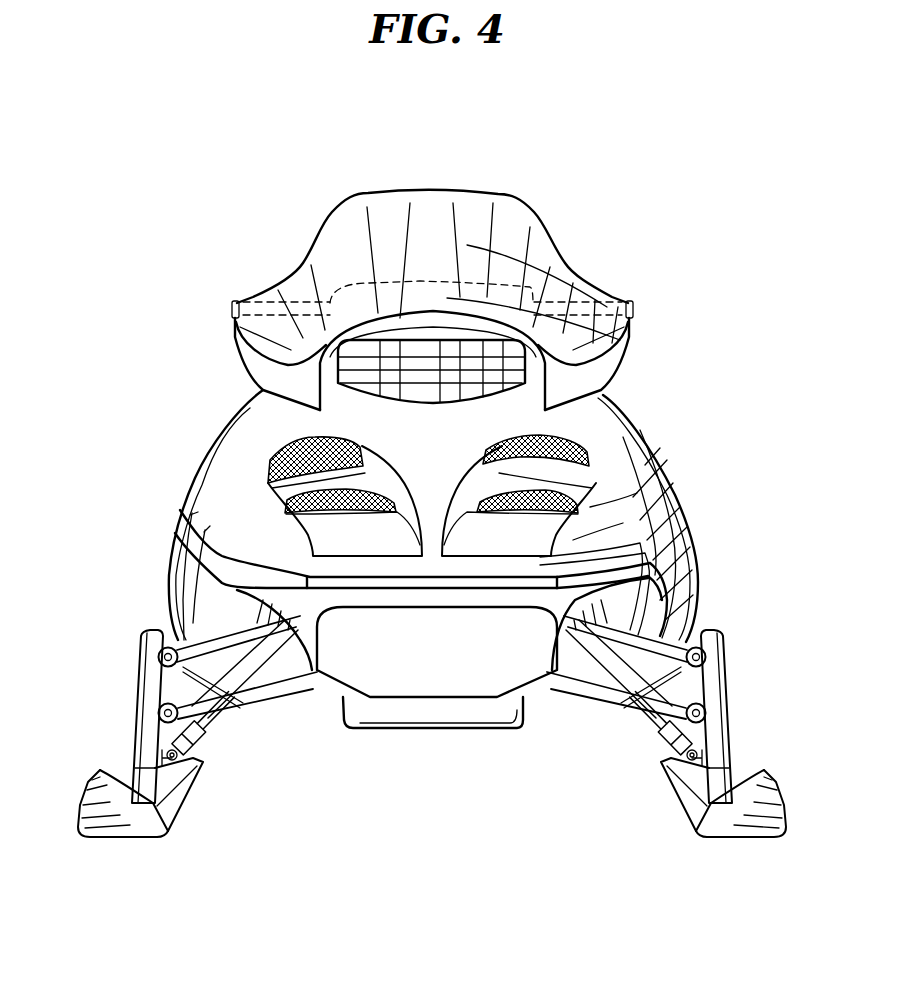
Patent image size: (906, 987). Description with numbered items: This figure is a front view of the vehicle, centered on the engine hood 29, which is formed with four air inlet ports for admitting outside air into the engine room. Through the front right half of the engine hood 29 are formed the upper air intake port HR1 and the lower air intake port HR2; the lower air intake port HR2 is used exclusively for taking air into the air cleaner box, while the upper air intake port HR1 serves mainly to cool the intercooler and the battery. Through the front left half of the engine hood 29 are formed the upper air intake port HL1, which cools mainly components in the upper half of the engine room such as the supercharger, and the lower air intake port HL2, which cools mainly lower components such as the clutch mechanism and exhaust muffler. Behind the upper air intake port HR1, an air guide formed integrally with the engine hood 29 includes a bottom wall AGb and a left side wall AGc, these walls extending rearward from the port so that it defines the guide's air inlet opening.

The left side wall AGc is at (367, 452).
The bottom wall AGb is at (347, 480).
The upper air intake port HR1 is at (270, 452).
The lower air intake port HR2 is at (298, 498).
The upper air intake port HL1 is at (562, 445).
The lower air intake port HL2 is at (590, 463).
The engine hood 29 is at (667, 462).